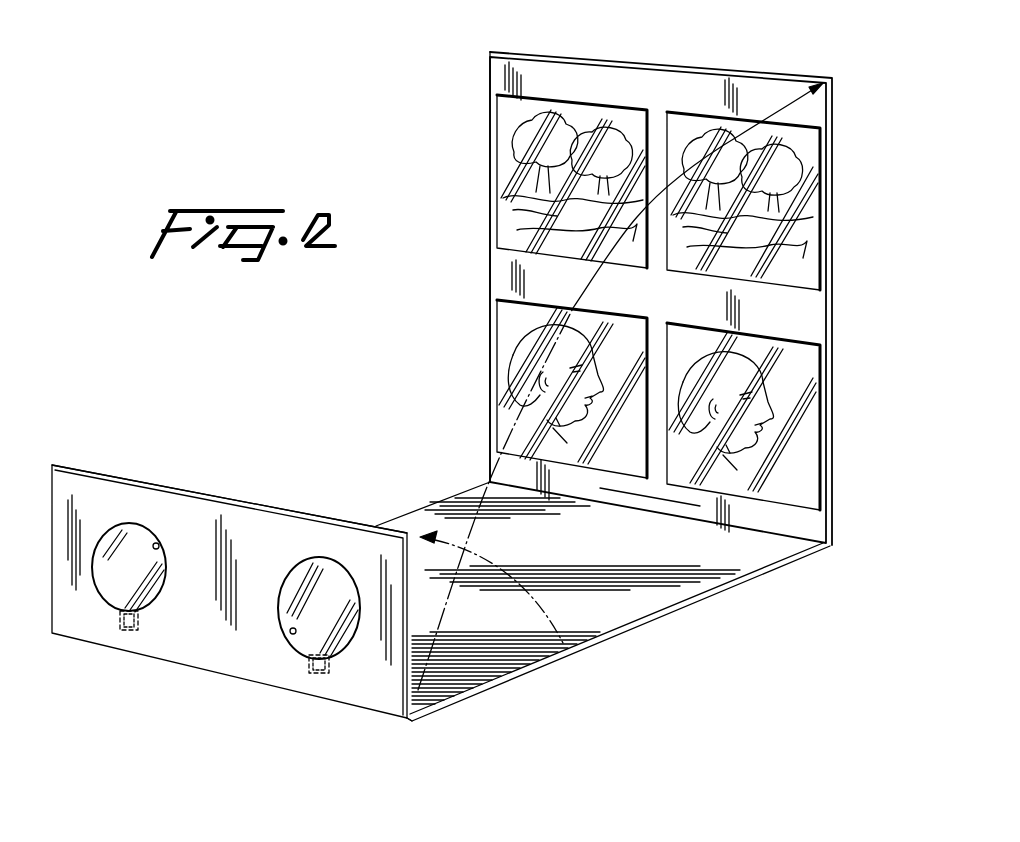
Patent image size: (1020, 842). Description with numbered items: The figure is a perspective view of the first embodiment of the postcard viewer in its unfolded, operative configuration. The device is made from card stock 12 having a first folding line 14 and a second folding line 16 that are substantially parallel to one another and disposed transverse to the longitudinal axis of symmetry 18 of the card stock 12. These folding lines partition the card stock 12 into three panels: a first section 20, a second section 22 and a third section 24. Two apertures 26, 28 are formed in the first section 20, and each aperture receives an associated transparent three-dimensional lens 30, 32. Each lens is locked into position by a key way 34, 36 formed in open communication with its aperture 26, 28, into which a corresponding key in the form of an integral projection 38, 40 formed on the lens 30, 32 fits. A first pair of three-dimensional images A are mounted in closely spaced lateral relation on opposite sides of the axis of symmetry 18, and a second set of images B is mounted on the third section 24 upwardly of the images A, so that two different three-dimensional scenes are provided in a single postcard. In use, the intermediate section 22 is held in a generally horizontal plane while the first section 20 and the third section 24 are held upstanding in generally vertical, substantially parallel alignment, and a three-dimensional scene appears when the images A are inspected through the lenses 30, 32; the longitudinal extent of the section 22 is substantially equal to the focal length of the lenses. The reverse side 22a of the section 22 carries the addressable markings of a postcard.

The card stock 12 is at (597, 609).
The first folding line 14 is at (183, 667).
The second folding line 16 is at (767, 537).
The longitudinal axis of symmetry 18 is at (638, 493).
The first section 20 is at (168, 493).
The second section 22 is at (520, 670).
The reverse side of panel 22 22a is at (447, 703).
The third section 24 is at (500, 272).
The aperture 26 is at (159, 545).
The aperture 28 is at (290, 633).
The 3-D lens 30 is at (112, 533).
The 3-D lens 32 is at (327, 570).
The key way 34 is at (122, 627).
The key way 36 is at (322, 673).
The integral projection 38 is at (127, 631).
The integral projection 40 is at (312, 673).
The 3-D image A is at (502, 373).
The 3-D image B is at (675, 122).